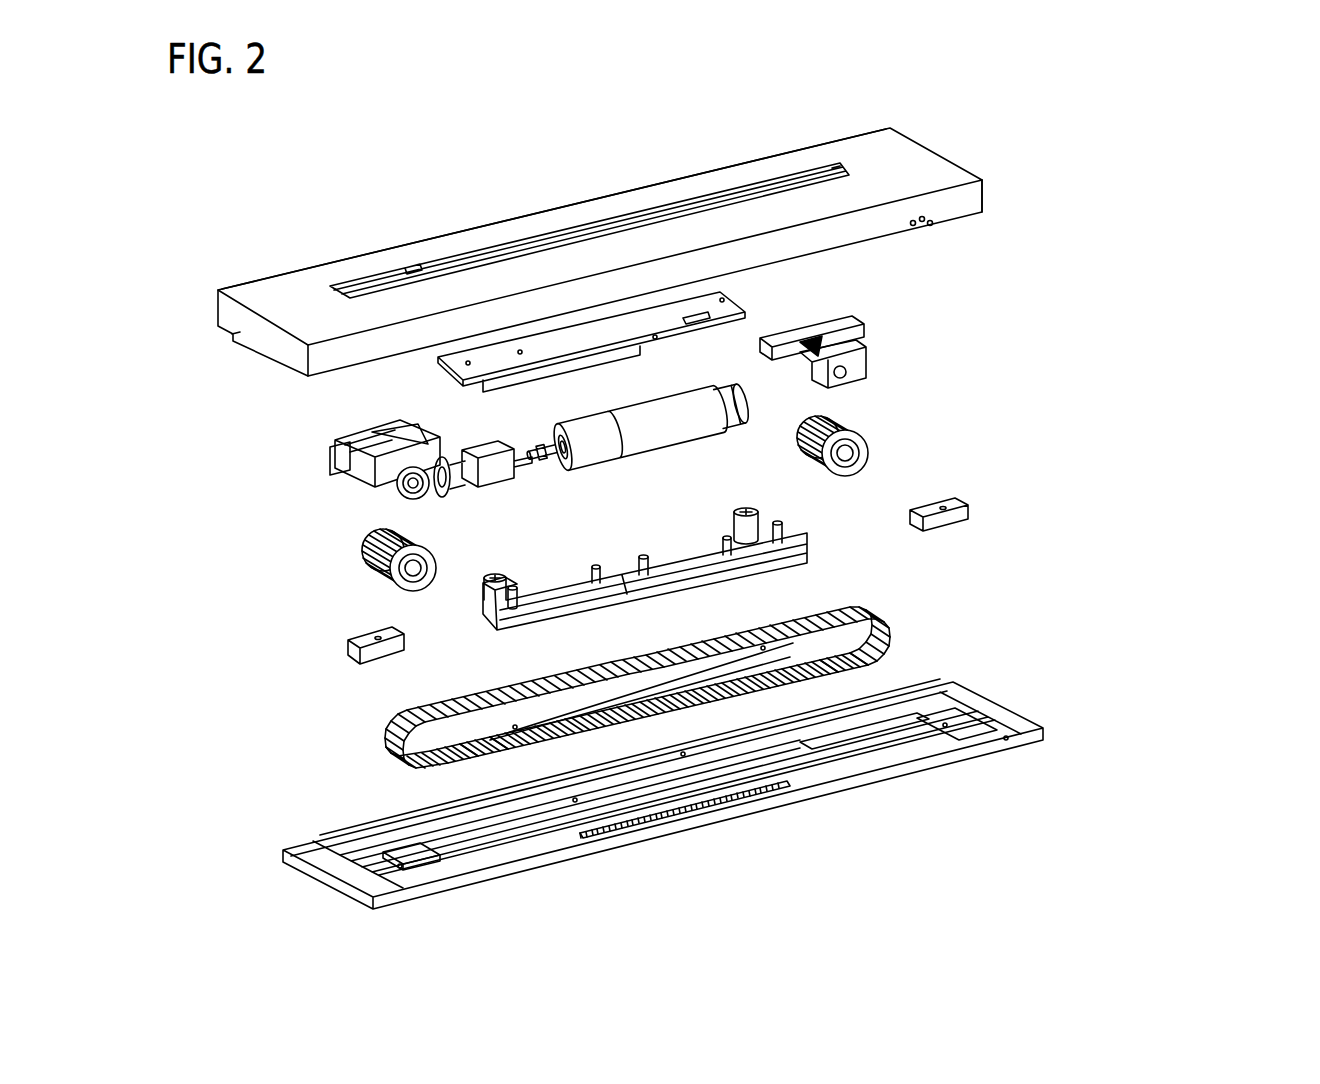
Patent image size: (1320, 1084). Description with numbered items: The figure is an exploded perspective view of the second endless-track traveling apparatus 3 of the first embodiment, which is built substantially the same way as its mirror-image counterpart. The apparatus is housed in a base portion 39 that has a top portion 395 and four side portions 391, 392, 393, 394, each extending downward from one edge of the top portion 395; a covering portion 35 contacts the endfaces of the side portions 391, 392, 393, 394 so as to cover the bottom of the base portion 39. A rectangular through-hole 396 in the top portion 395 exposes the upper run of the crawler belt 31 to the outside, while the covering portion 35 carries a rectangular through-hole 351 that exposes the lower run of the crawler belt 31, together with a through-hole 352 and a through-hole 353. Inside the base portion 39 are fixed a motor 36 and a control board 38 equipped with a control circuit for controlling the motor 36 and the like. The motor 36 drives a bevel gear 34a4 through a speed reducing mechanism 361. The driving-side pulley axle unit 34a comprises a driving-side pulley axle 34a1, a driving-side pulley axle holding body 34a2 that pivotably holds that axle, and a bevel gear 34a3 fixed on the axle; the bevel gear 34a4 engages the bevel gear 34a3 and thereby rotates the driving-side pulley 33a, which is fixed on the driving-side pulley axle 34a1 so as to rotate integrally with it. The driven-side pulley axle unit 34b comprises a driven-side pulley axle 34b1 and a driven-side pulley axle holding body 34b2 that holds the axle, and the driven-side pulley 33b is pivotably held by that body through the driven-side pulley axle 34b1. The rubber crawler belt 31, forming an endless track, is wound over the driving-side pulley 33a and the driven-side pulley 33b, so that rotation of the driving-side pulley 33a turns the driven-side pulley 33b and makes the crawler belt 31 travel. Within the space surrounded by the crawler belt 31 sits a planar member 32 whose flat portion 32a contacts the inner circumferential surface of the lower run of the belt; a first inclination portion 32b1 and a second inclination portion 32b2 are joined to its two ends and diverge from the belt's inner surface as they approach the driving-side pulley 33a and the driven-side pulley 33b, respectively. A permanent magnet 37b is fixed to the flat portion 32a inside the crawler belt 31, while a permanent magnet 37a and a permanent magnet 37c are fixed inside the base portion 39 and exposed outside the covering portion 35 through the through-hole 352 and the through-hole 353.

The second endless-track traveling apparatus 3 is at (1180, 423).
The crawler belt 31 is at (310, 701).
The planar member 32 is at (589, 711).
The flat portion 32a is at (585, 712).
The first inclination portion 32b1 is at (487, 728).
The second inclination portion 32b2 is at (850, 652).
The driving-side pulley 33a is at (385, 540).
The driven-side pulley 33b is at (868, 460).
The driving-side pulley axle unit 34a is at (345, 468).
The driving-side pulley axle 34a1 is at (352, 442).
The driving-side pulley axle holding body 34a2 is at (351, 452).
The bevel gear 34a3 is at (398, 505).
The bevel gear 34a4 is at (444, 455).
The driven-side pulley axle unit 34b is at (910, 328).
The driven-side pulley axle 34b1 is at (802, 348).
The driven-side pulley axle holding body 34b2 is at (872, 358).
The covering portion 35 is at (636, 823).
The through-hole 351 is at (809, 757).
The through-hole 352 is at (396, 866).
The through-hole 353 is at (960, 724).
The motor 36 is at (765, 444).
The speed reducing mechanism 361 is at (500, 483).
The permanent magnet 37a is at (385, 634).
The permanent magnet 37b is at (693, 565).
The permanent magnet 37c is at (943, 507).
The control board 38 is at (588, 334).
The base portion 39 is at (641, 238).
The side portion 391 is at (950, 210).
The side portion 392 is at (232, 313).
The side portion 393 is at (356, 256).
The side portion 394 is at (985, 192).
The top portion 395 is at (926, 170).
The rectangular through-hole 396 is at (690, 208).